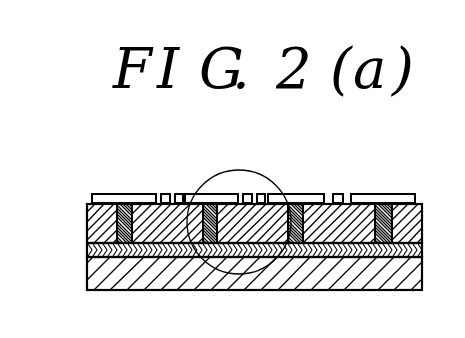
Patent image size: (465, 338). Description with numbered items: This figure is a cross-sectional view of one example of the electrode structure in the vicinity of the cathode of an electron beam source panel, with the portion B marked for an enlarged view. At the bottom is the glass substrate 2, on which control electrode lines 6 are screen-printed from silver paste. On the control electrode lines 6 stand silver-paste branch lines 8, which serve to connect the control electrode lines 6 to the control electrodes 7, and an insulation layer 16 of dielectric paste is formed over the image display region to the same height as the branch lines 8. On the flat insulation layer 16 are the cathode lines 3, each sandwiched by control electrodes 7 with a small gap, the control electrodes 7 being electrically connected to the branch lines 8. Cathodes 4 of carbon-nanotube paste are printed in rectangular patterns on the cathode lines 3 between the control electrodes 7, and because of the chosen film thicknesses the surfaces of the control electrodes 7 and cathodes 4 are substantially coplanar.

The substrate 2 is at (96, 271).
The cathode lines 3 is at (280, 200).
The cathodes 4 is at (253, 196).
The control electrode lines 6 is at (422, 246).
The control electrodes 7 is at (380, 198).
The branch lines 8 is at (88, 226).
The insulation layer 16 is at (155, 202).
The portion B is at (258, 183).